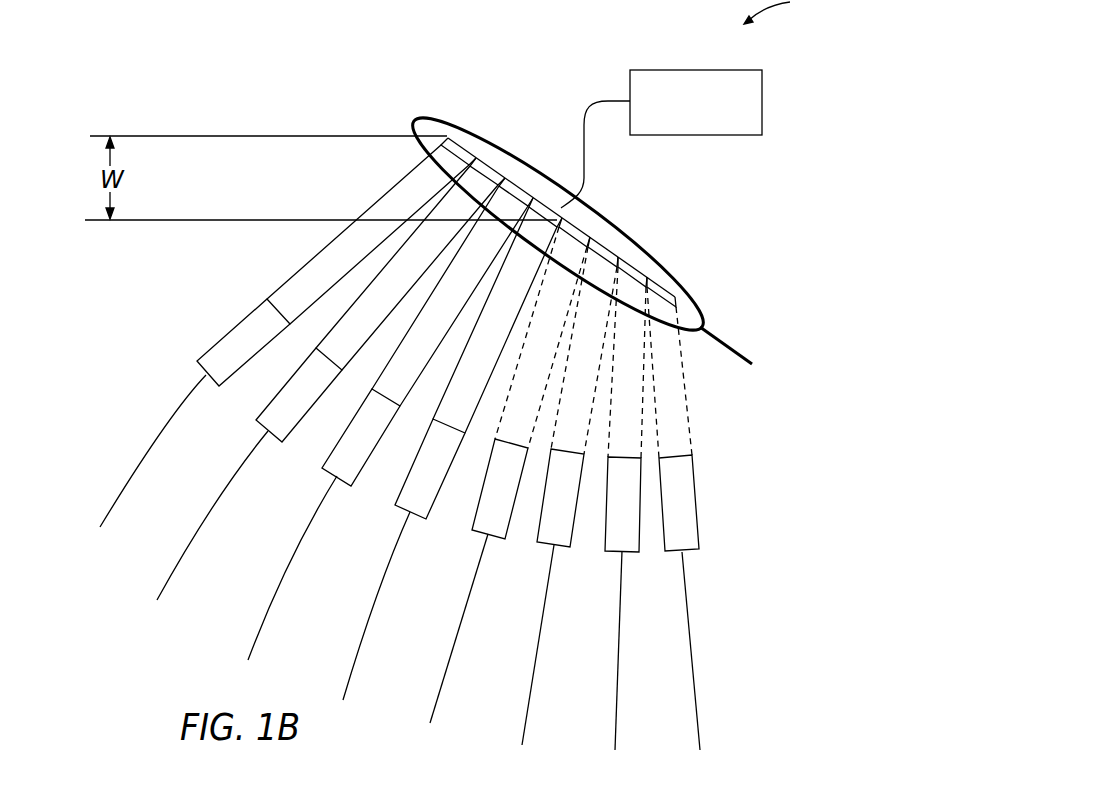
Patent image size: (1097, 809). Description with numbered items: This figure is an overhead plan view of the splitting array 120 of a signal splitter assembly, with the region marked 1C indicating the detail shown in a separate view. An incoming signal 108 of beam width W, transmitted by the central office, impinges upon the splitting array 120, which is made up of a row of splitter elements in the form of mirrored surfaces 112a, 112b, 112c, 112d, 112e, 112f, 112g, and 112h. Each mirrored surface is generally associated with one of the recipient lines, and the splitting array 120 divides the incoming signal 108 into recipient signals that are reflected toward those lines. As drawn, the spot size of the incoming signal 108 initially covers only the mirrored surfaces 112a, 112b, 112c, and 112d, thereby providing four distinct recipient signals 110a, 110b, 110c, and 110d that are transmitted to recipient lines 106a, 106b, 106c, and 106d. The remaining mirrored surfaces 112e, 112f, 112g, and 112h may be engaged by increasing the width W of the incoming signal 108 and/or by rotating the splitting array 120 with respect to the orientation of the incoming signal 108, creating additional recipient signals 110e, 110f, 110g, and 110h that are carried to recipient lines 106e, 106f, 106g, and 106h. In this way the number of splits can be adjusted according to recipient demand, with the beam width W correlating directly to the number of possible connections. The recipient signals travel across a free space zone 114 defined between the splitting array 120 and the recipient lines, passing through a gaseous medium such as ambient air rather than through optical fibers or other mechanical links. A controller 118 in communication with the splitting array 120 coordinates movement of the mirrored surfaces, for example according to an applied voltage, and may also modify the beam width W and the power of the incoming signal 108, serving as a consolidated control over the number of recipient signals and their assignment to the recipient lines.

The recipient line 106a is at (118, 490).
The recipient line 106b is at (182, 556).
The recipient line 106c is at (268, 608).
The recipient line 106d is at (358, 642).
The recipient line 106e is at (440, 683).
The recipient line 106f is at (525, 720).
The recipient line 106g is at (615, 733).
The recipient line 106h is at (700, 729).
The incoming signal 108 is at (231, 176).
The recipient signal 110a is at (283, 289).
The recipient signal 110b is at (333, 323).
The recipient signal 110c is at (383, 367).
The recipient signal 110d is at (437, 397).
The recipient signal 110e is at (500, 422).
The recipient signal 110f is at (557, 423).
The recipient signal 110g is at (610, 437).
The recipient signal 110h is at (690, 433).
The mirrored surface 112a is at (468, 126).
The mirrored surface 112b is at (497, 160).
The mirrored surface 112c is at (522, 190).
The mirrored surface 112d is at (549, 208).
The mirrored surface 112e is at (573, 226).
The mirrored surface 112f is at (608, 250).
The mirrored surface 112g is at (642, 274).
The mirrored surface 112h is at (668, 294).
The free space zone 114 is at (608, 388).
The controller 118 is at (661, 139).
The splitting array 120 is at (607, 230).
The detail view reference 1C is at (588, 240).